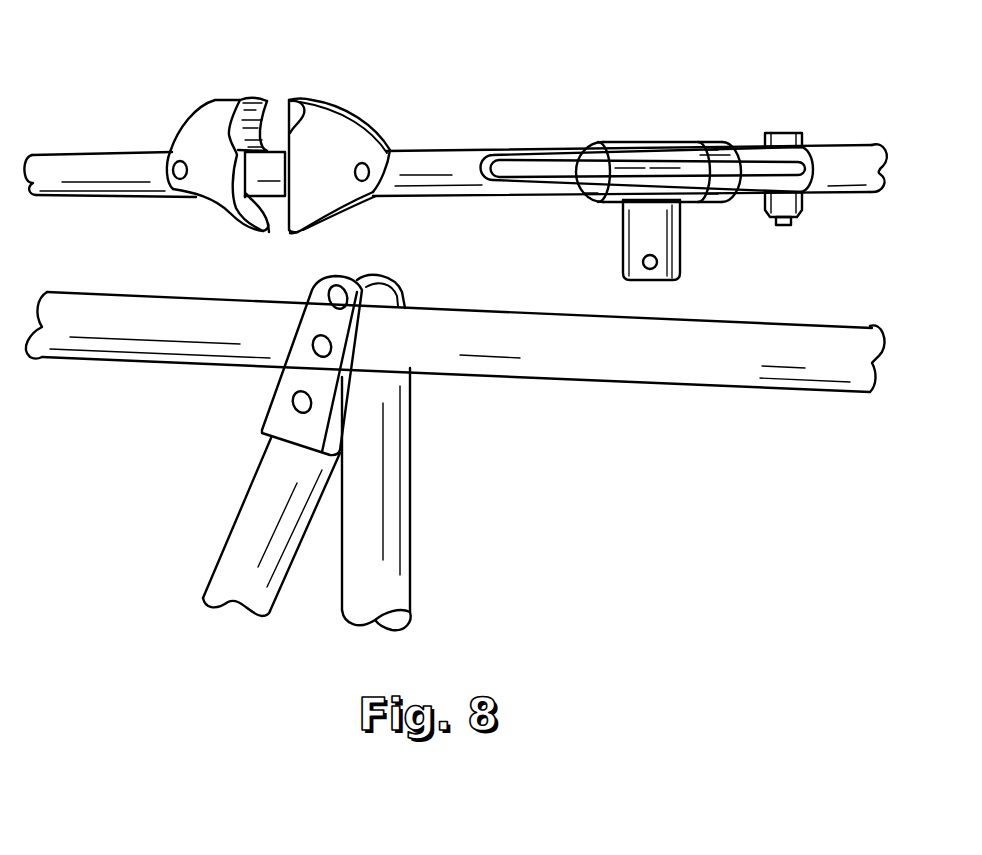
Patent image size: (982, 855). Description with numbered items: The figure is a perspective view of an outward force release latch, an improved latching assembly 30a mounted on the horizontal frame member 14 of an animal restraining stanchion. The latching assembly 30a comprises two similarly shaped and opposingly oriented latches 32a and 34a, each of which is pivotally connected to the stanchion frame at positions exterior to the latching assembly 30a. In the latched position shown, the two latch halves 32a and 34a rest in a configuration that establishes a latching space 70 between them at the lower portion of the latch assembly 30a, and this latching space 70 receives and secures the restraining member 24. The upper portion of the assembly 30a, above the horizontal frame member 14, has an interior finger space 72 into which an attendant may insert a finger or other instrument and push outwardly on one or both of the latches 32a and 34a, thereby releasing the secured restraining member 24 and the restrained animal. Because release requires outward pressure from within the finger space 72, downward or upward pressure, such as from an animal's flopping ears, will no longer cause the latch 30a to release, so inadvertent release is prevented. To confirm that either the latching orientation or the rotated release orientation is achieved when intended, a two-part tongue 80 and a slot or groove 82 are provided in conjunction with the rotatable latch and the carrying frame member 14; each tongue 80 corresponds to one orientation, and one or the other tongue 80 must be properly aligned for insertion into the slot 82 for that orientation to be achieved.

The horizontal frame member 14 is at (113, 163).
The restraining member 24 is at (258, 498).
The latching assembly 30a is at (165, 104).
The latch 32a is at (220, 117).
The latch 34a is at (328, 127).
The latching space 70 is at (278, 225).
The interior finger space 72 is at (282, 120).
The two-part tongue 80 is at (638, 207).
The slot 82 is at (532, 168).